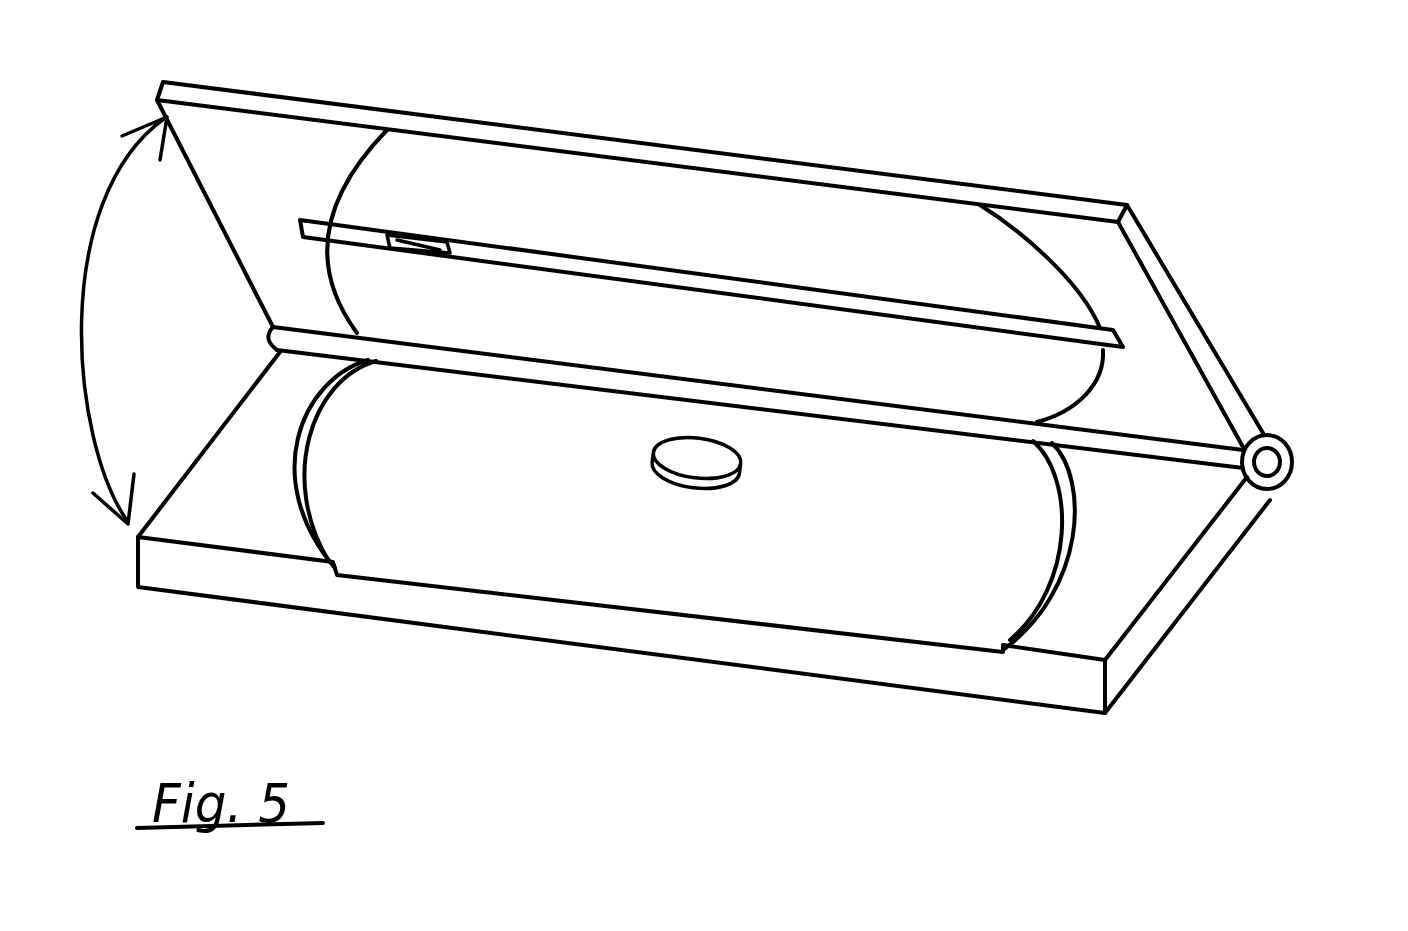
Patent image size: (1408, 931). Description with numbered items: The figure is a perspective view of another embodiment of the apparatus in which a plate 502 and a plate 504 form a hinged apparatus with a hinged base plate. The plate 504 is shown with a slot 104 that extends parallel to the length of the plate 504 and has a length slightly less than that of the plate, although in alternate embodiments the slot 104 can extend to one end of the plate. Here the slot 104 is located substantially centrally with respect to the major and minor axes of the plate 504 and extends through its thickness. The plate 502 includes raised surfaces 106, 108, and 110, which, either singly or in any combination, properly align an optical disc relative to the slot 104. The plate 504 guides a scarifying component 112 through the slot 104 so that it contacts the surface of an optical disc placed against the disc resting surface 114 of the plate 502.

The plate 502 is at (1153, 533).
The plate 504 is at (240, 148).
The slot 104 is at (313, 237).
The raised surface 106 is at (293, 480).
The raised surface 108 is at (1040, 617).
The raised surface 110 is at (702, 468).
The scarifying component 112 is at (420, 233).
The disc resting surface 114 is at (624, 587).